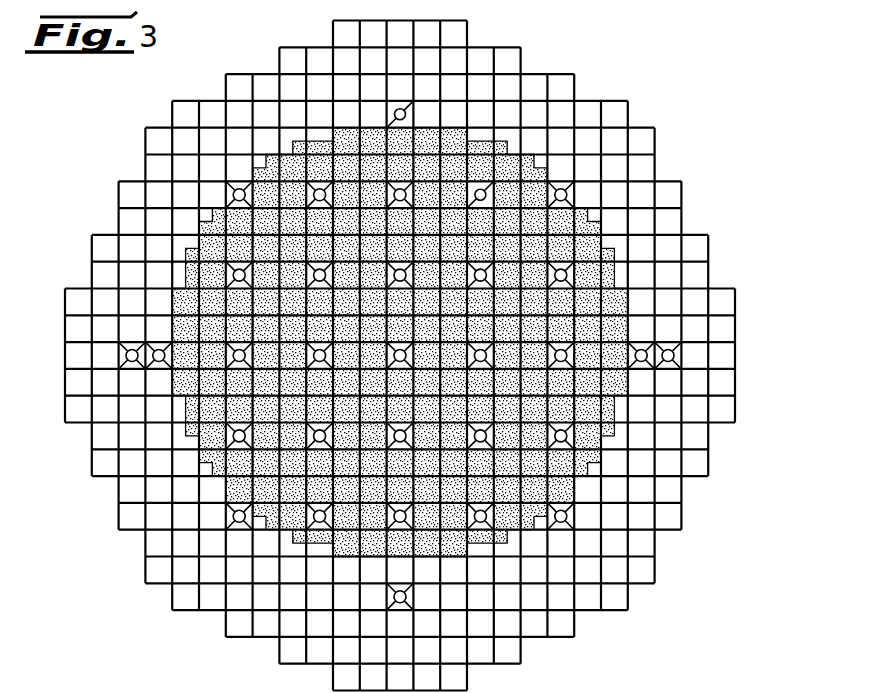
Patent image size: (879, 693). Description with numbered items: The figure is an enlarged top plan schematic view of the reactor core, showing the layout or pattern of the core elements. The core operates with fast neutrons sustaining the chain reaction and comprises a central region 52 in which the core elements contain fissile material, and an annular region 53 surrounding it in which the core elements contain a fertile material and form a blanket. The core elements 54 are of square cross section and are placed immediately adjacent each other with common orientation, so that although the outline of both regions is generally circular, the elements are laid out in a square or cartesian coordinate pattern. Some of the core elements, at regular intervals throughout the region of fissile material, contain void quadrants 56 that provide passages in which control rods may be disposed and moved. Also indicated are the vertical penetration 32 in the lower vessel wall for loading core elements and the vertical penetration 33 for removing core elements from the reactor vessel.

The vertical penetration 32 is at (124, 355).
The vertical penetration 33 is at (682, 362).
The central region 52 is at (538, 198).
The annular region 53 is at (670, 202).
The core elements 54 is at (586, 430).
The void quadrants 56 is at (491, 364).